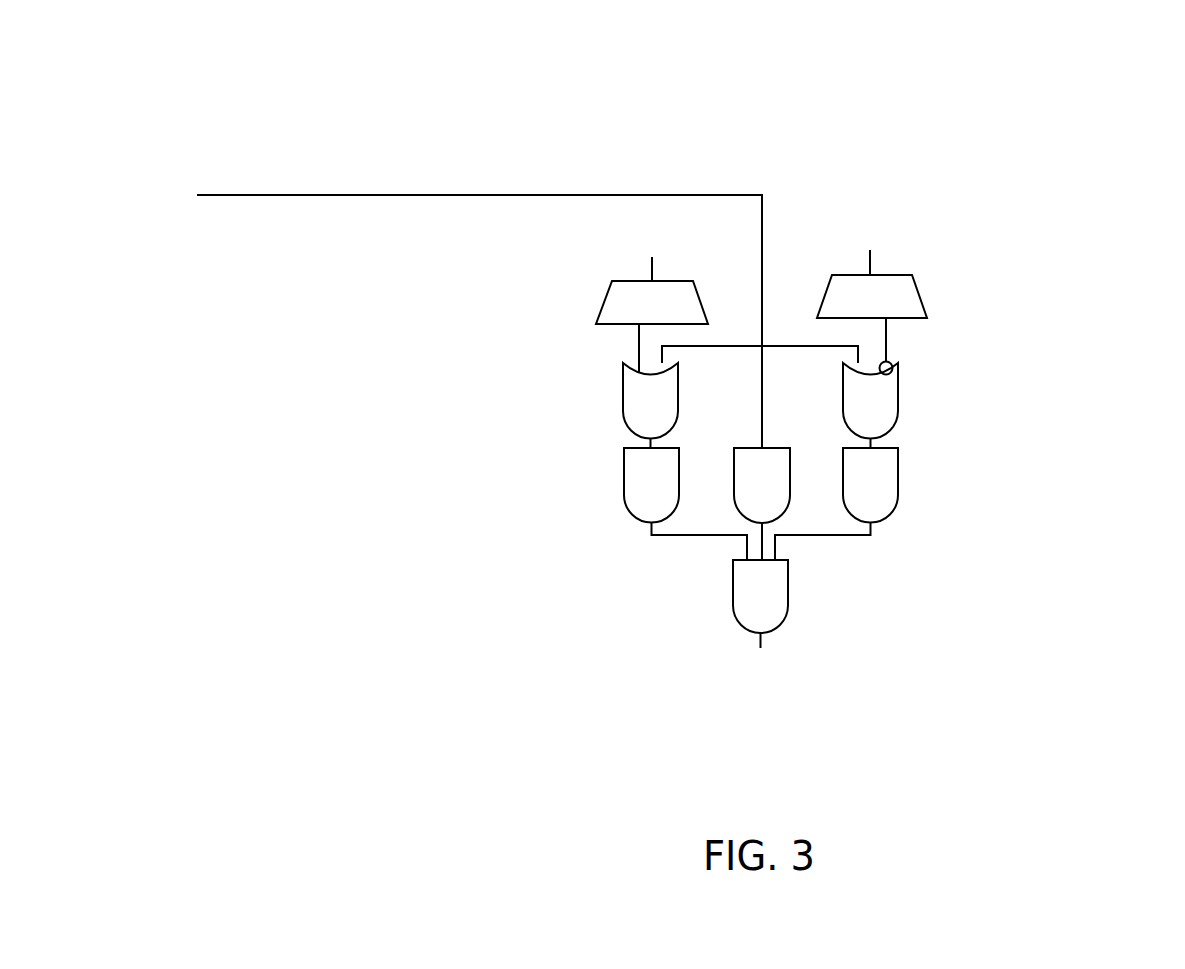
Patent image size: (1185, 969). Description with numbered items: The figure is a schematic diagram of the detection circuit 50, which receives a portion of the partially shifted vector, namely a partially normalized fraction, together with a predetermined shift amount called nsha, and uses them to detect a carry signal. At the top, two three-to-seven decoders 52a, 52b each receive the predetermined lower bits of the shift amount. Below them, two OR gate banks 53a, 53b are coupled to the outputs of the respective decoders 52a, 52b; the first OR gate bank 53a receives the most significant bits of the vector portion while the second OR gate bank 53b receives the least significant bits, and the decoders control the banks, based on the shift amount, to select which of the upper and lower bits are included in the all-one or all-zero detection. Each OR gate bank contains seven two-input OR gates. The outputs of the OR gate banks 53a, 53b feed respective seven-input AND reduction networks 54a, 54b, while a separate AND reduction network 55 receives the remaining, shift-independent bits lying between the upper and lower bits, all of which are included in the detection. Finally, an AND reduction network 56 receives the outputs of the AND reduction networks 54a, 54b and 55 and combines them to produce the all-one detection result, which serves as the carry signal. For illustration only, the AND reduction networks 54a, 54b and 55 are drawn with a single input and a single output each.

The detection circuit 50 is at (1032, 86).
The 3-to-7 decoder 52a is at (607, 293).
The 3-to-7 decoder 52b is at (922, 295).
The OR gate bank 53a is at (623, 405).
The OR gate bank 53b is at (898, 403).
The AND reduction network 54a is at (624, 487).
The AND reduction network 54b is at (898, 478).
The AND reduction network 55 is at (734, 465).
The AND reduction network 56 is at (788, 600).